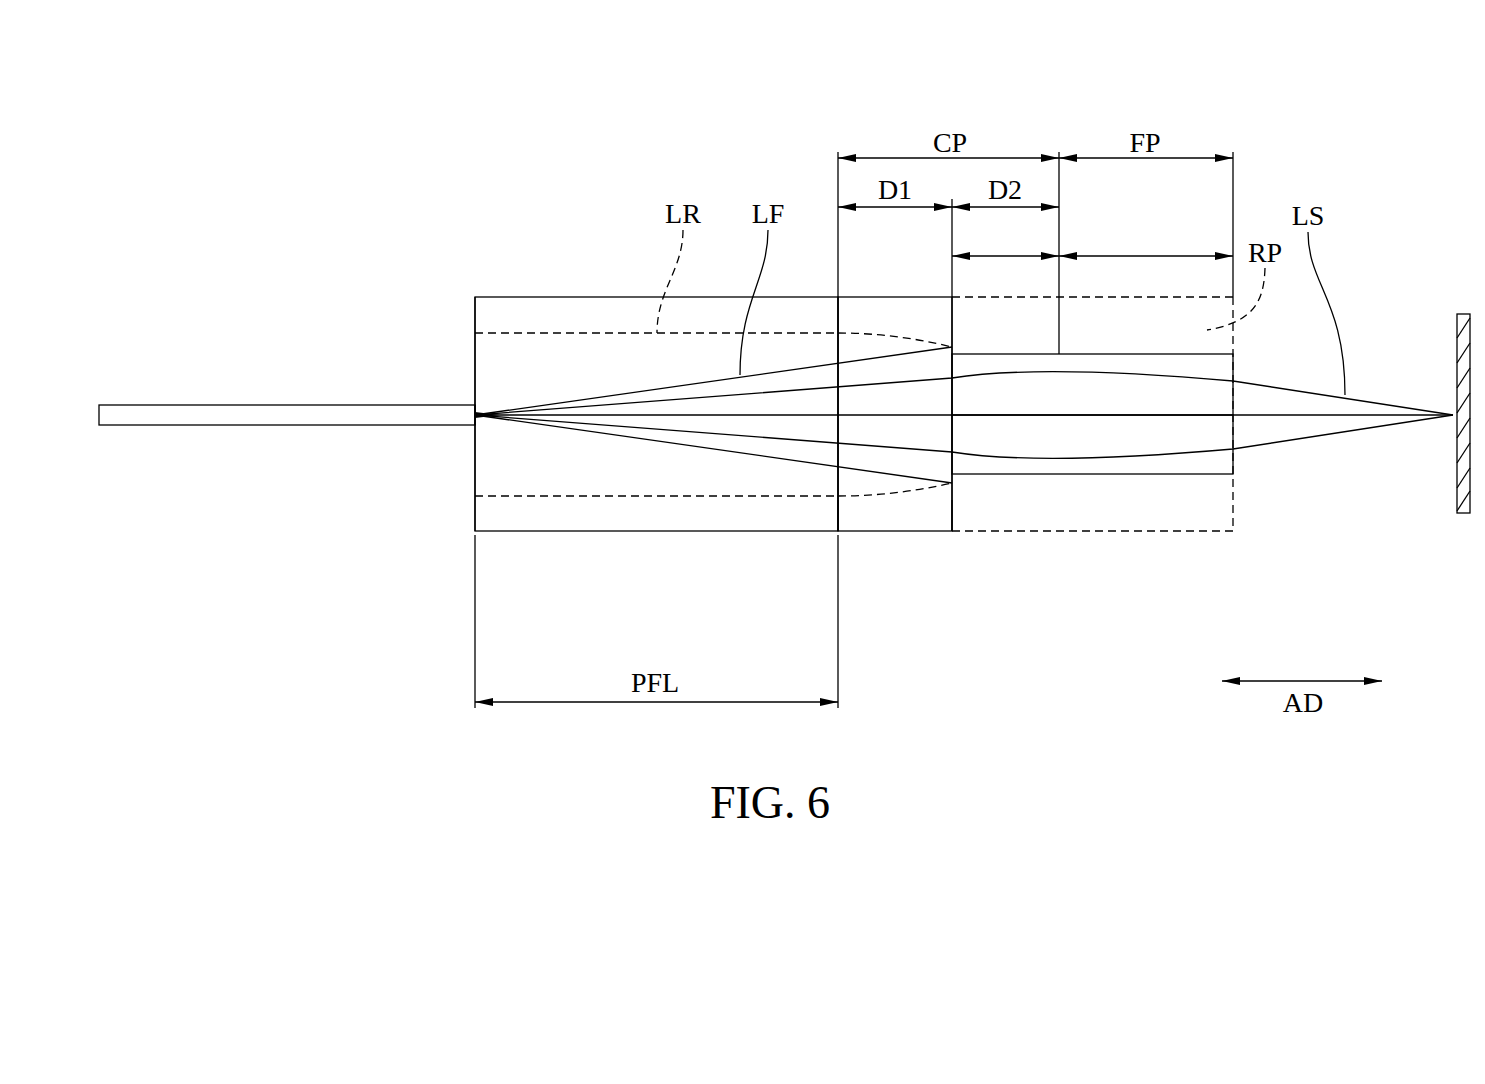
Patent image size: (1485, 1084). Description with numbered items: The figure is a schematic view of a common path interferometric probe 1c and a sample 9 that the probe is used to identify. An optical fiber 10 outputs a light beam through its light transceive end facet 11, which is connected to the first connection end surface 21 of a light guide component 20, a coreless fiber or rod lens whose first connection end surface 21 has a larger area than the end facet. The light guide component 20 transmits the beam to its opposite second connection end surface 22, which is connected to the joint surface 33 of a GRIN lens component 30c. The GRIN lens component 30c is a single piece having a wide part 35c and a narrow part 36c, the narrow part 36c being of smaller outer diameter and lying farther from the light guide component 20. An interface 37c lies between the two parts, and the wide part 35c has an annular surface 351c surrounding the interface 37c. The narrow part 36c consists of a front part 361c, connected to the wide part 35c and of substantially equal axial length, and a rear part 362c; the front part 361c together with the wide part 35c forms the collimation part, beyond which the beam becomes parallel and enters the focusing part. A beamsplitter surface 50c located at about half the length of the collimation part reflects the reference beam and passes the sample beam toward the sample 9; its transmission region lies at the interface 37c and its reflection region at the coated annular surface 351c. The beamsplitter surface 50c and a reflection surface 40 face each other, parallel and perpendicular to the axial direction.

The common path interferometric probe 1c is at (145, 83).
The sample 9 is at (1459, 316).
The optical fiber 10 is at (287, 404).
The light transceive end facet 11 is at (476, 410).
The light guide component 20 is at (657, 533).
The first connection end surface 21 is at (476, 484).
The second connection end surface 22 is at (838, 512).
The joint surface 33 is at (838, 521).
The reflection surface 40 is at (476, 333).
The GRIN lens component 30c is at (877, 646).
The wide part 35c is at (885, 533).
The annular surface 351c is at (952, 512).
The beamsplitter surface 50c is at (952, 532).
The narrow part 36c is at (1077, 476).
The interface 37c is at (952, 432).
The front part 361c is at (1005, 239).
The rear part 362c is at (1146, 239).